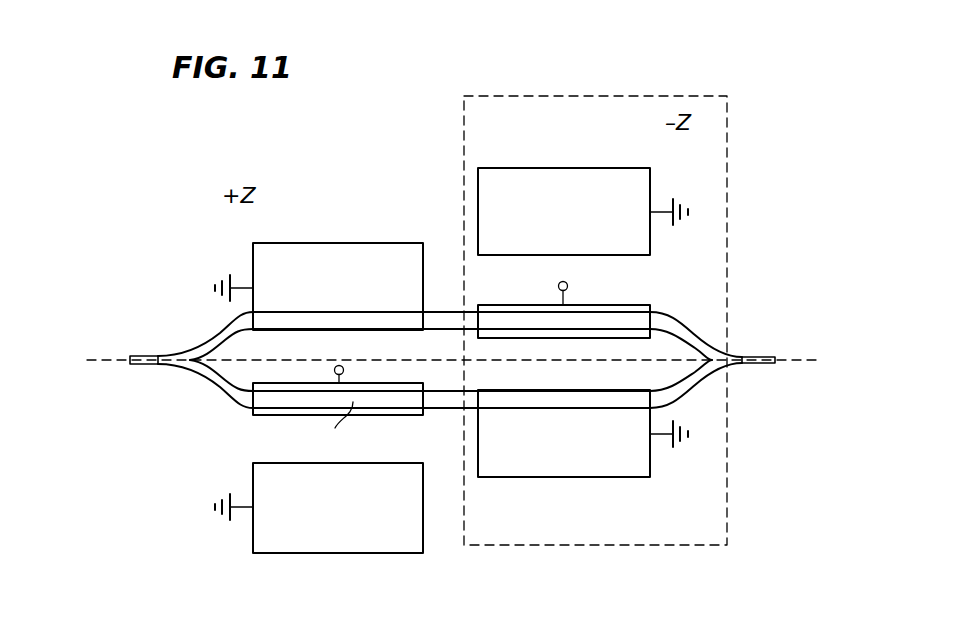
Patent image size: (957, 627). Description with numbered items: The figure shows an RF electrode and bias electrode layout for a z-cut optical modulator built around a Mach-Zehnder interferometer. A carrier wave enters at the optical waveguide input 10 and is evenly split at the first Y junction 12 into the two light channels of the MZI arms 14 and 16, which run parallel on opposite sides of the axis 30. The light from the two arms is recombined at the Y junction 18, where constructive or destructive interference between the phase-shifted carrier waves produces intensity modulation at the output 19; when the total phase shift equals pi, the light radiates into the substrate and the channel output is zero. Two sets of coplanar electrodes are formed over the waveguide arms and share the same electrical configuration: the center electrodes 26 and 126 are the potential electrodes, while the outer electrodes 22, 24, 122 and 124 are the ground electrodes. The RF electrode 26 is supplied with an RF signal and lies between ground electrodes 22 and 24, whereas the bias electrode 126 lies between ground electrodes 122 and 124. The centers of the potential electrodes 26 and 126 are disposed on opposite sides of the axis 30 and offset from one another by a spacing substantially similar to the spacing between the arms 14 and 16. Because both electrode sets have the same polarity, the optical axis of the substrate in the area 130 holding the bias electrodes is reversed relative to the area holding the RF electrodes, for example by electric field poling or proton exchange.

The optical waveguide input 10 is at (157, 355).
The first Y junction 12 is at (203, 342).
The MZI arm 14 is at (432, 312).
The MZI arm 16 is at (445, 410).
The Y junction 18 is at (683, 318).
The output 19 is at (763, 367).
The ground electrode 22 is at (272, 553).
The ground electrode 24 is at (308, 243).
The RF electrode 26 is at (262, 418).
The axis 30 is at (113, 362).
The ground electrode 122 is at (490, 477).
The ground electrode 124 is at (531, 168).
The bias electrode 126 is at (582, 338).
The area of the substrate 130 is at (727, 473).